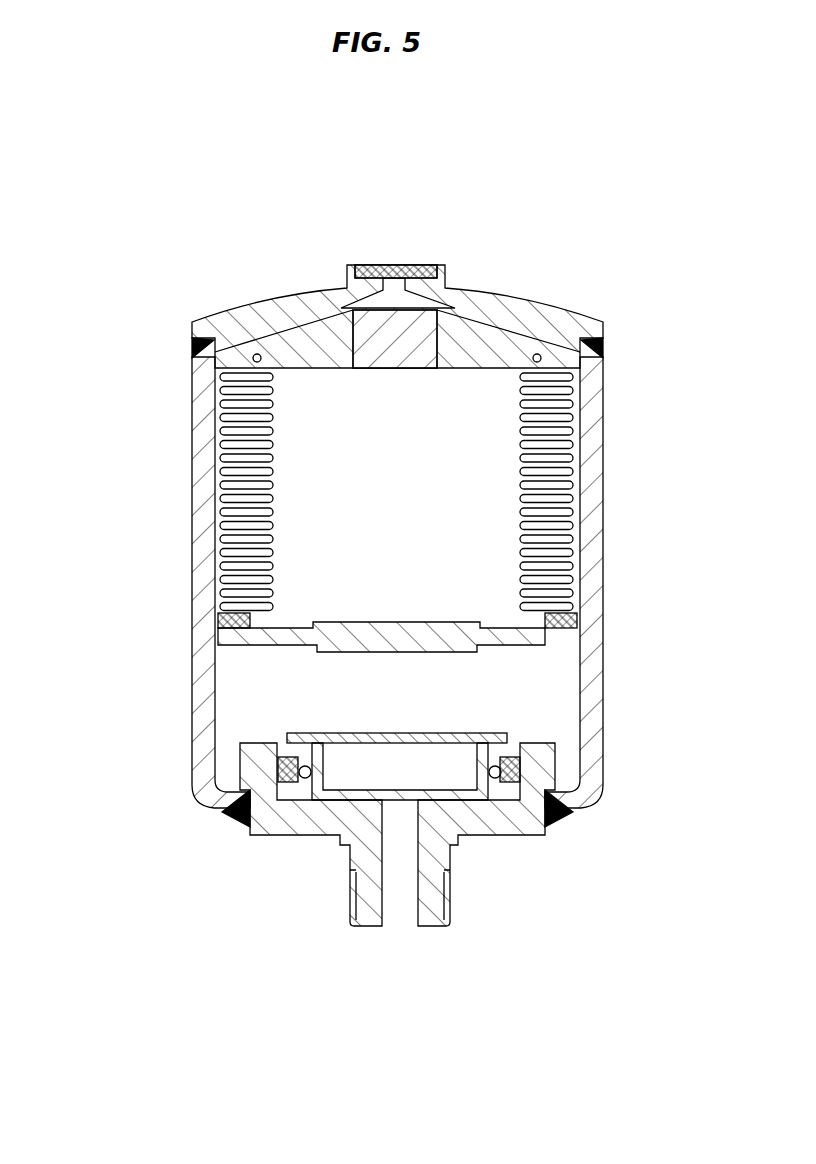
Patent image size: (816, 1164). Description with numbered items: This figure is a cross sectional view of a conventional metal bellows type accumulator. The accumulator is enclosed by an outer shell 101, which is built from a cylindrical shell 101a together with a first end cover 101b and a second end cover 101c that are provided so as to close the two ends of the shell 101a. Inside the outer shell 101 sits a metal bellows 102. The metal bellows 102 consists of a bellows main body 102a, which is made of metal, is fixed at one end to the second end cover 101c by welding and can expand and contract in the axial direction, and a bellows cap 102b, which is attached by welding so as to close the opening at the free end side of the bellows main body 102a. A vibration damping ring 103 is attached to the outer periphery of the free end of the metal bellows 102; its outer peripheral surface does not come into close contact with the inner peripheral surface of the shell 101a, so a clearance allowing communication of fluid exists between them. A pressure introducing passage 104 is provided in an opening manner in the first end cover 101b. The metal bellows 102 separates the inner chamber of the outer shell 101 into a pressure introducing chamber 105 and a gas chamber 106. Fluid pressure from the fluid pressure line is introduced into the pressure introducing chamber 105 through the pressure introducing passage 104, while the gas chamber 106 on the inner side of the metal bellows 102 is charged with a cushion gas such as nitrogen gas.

The outer shell 101 is at (327, 602).
The cylindrical shell 101a is at (193, 548).
The first end cover 101b is at (390, 871).
The second end cover 101c is at (510, 292).
The metal bellows 102 is at (334, 542).
The bellows main body 102a is at (200, 467).
The bellows cap 102b is at (388, 635).
The vibration damping ring 103 is at (577, 622).
The pressure introducing passage 104 is at (403, 900).
The pressure introducing chamber 105 is at (510, 690).
The gas chamber 106 is at (453, 483).